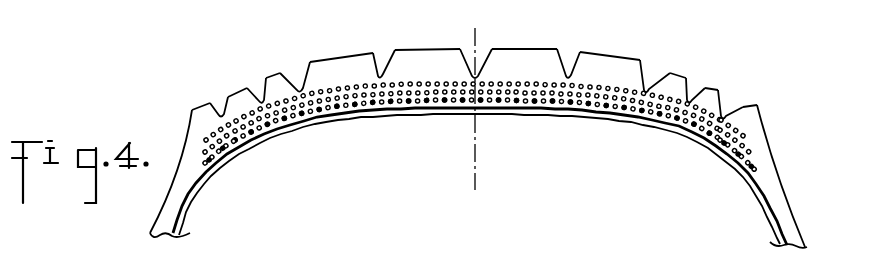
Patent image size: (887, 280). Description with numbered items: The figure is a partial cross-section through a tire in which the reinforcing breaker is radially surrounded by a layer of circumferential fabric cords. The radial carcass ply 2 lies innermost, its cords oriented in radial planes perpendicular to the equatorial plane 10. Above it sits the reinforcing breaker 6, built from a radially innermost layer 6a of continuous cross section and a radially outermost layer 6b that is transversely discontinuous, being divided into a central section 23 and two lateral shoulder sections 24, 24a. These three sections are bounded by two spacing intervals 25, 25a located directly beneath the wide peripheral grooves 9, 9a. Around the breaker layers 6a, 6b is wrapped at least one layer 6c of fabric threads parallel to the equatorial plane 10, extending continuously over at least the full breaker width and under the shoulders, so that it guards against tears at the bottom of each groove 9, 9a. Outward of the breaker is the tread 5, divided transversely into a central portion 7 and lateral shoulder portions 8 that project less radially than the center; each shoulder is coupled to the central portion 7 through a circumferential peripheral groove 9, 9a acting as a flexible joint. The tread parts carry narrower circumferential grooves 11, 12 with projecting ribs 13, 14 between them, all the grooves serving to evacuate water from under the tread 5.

The carcass ply 2 is at (190, 203).
The tread 5 is at (458, 17).
The reinforcing breaker 6 is at (380, 117).
The radially innermost layer 6a is at (436, 106).
The radially outermost layer 6b is at (553, 98).
The layer of circumferential fabric cords 6c is at (592, 100).
The central portion 7 is at (528, 42).
The lateral shoulder portion 8 is at (276, 68).
The circumferential peripheral groove 9 is at (297, 80).
The circumferential peripheral groove 9a is at (653, 80).
The equatorial plane 10 is at (475, 168).
The groove 11 is at (383, 62).
The groove 12 is at (220, 100).
The projecting rib 13 is at (350, 53).
The projecting rib 14 is at (200, 102).
The central section 23 is at (508, 98).
The lateral shoulder section 24 is at (215, 133).
The lateral shoulder section 24a is at (745, 143).
The spacing interval 25 is at (307, 112).
The spacing interval 25a is at (650, 120).